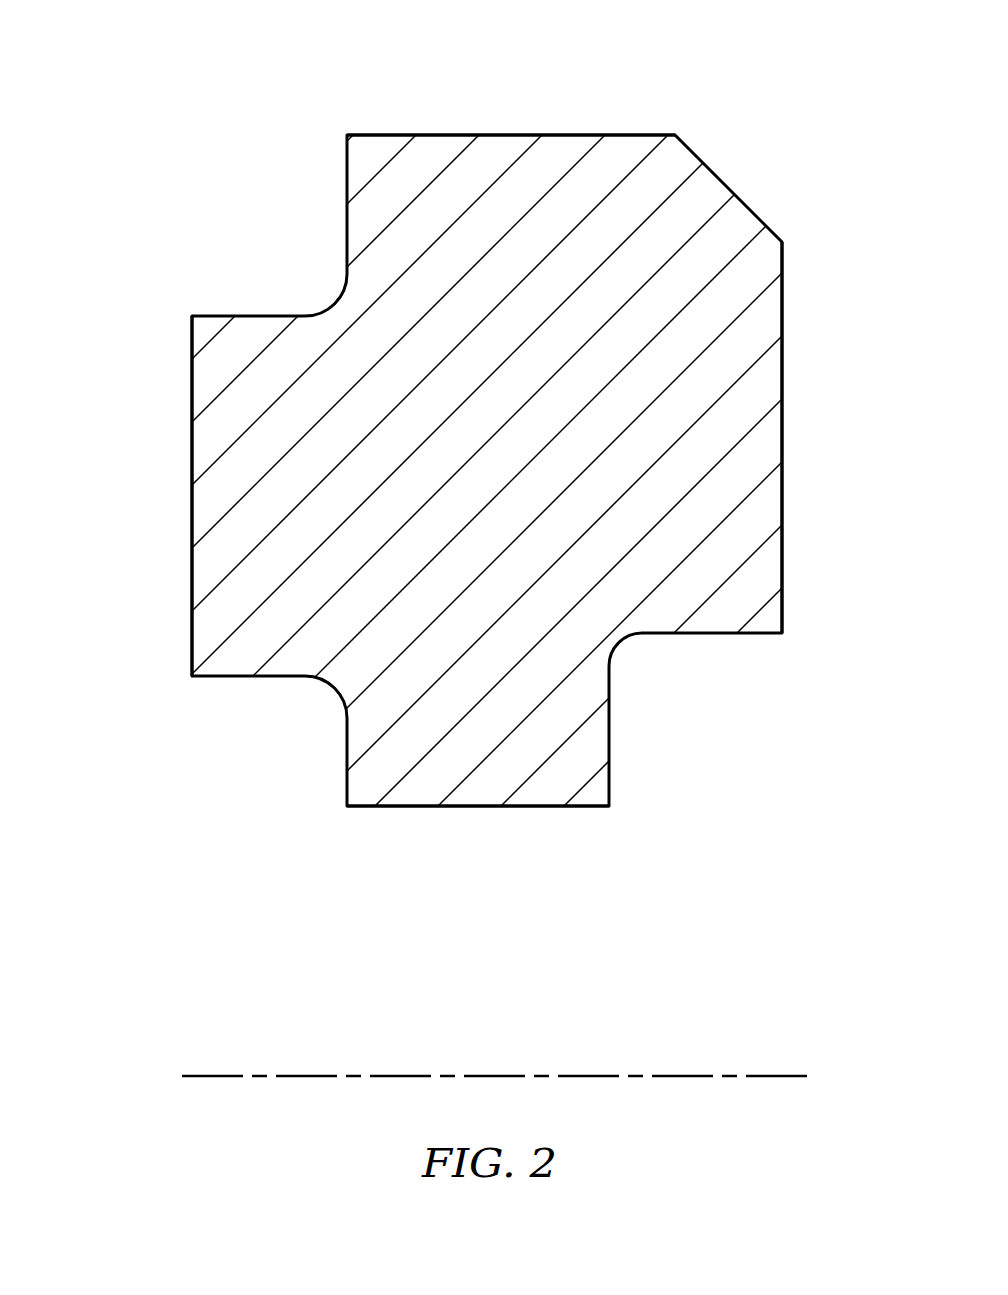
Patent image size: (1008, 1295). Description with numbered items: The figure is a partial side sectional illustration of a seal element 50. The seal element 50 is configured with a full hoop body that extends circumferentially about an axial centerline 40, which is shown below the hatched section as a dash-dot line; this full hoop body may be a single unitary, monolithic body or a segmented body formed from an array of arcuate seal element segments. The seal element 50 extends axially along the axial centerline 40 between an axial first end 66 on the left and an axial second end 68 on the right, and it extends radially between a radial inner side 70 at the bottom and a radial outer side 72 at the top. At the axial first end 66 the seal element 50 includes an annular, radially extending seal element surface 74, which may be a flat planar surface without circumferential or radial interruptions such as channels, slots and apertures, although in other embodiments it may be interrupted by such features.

The seal element 50 is at (702, 94).
The radial outer side 72 is at (553, 135).
The axial second end 68 is at (783, 472).
The axial first end 66 is at (192, 514).
The seal element surface 74 is at (117, 496).
The radial inner side 70 is at (462, 807).
The axial centerline 40 is at (797, 1072).